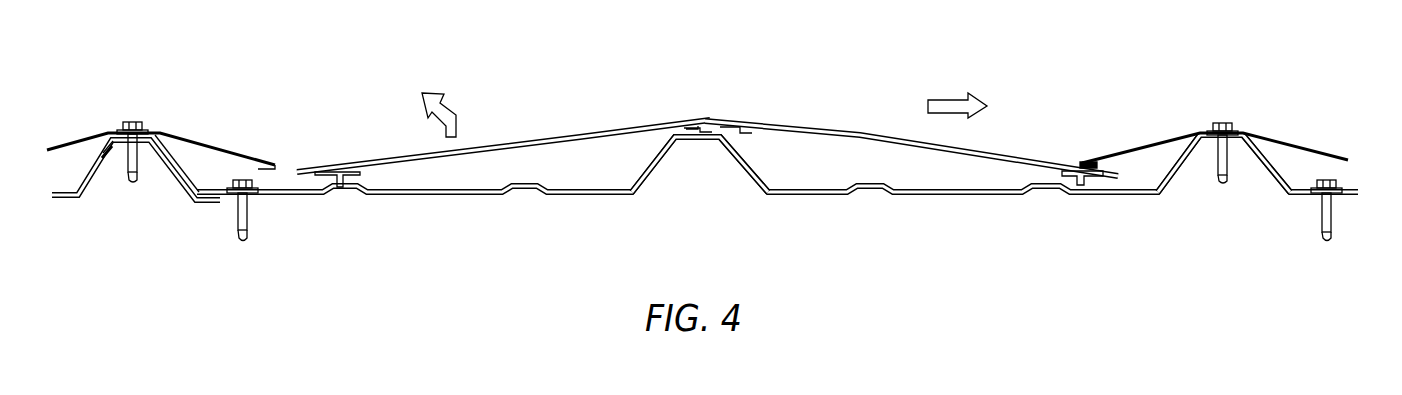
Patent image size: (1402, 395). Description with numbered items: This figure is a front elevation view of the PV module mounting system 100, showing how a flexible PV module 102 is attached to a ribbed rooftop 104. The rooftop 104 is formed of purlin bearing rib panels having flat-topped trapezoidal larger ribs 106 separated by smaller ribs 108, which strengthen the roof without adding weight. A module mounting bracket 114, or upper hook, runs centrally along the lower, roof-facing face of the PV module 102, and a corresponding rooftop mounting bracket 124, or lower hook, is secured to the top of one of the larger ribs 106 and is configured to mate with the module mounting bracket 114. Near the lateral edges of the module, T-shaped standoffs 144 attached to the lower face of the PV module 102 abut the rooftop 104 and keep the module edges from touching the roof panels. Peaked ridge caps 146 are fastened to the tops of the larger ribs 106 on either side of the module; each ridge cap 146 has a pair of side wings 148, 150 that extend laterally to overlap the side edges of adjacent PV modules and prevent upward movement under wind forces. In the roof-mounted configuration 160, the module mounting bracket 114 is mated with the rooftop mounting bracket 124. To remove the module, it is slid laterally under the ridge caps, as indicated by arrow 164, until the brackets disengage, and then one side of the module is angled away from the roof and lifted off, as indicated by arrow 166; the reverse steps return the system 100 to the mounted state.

The mounting system 100 is at (300, 85).
The flexible PV module 102 is at (522, 139).
The ribbed rooftop 104 is at (593, 196).
The larger ribs 106 is at (94, 186).
The smaller ribs 108 is at (364, 198).
The module mounting bracket 114 is at (746, 130).
The rooftop mounting bracket 124 is at (697, 133).
The standoffs 144 is at (342, 189).
The ridge caps 146 is at (181, 139).
The side wing 148 is at (76, 148).
The side wing 150 is at (245, 158).
The roof-mounted configuration 160 is at (380, 92).
The arrow 164 is at (947, 93).
The arrow 166 is at (450, 104).